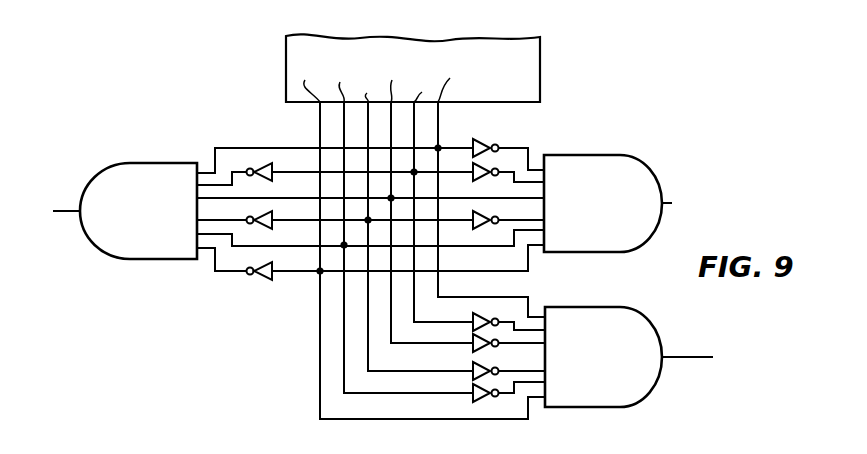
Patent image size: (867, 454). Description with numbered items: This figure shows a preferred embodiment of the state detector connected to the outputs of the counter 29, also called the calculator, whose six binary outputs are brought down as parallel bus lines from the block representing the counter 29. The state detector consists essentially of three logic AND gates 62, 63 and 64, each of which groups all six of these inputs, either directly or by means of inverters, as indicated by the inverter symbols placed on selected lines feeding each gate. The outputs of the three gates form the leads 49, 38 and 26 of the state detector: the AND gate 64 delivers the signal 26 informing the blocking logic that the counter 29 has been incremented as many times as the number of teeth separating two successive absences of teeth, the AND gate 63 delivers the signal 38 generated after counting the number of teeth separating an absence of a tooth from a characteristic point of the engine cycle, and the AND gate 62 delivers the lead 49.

The counter 29 is at (540, 68).
The signal 26 is at (68, 211).
The signal 38 is at (672, 203).
The lead 49 is at (673, 358).
The logic AND gate 62 is at (602, 368).
The logic AND gate 63 is at (612, 216).
The logic AND gate 64 is at (155, 216).